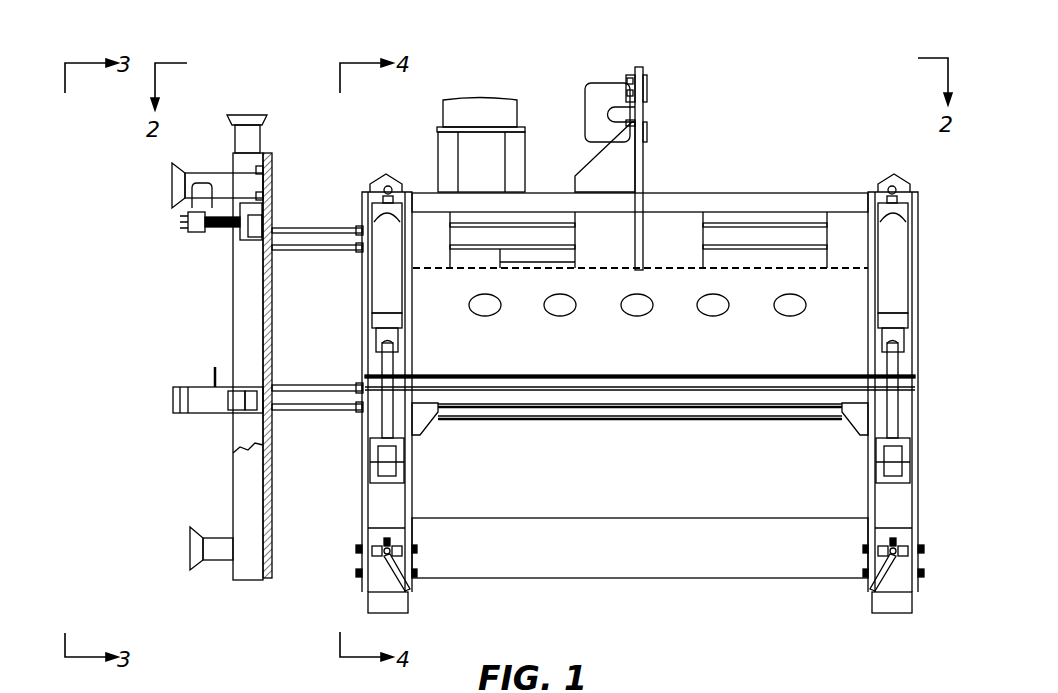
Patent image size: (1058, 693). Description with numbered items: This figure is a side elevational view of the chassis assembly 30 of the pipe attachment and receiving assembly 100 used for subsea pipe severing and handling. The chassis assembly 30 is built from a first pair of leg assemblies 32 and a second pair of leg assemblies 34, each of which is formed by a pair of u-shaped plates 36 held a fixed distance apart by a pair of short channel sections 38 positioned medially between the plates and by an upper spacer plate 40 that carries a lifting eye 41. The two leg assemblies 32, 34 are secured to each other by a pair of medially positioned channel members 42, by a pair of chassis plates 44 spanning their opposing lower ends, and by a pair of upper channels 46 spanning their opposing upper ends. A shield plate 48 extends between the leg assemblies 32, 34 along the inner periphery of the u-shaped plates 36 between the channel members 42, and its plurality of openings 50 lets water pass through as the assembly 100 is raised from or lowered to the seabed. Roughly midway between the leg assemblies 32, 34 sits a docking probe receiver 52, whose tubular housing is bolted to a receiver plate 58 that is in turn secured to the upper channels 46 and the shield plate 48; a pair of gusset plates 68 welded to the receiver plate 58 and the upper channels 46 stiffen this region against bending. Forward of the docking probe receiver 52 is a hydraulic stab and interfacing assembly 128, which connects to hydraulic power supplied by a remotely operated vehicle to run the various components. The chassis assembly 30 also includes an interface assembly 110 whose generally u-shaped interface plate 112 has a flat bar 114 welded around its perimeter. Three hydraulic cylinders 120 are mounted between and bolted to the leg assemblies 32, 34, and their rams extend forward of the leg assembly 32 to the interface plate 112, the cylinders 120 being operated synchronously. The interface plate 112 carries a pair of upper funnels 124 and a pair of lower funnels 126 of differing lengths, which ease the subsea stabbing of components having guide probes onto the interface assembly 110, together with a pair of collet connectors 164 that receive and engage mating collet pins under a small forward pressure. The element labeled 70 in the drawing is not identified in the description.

The pipe attachment and receiving assembly 100 is at (661, 48).
The chassis assembly 30 is at (740, 163).
The first pair of leg assemblies 32 is at (352, 529).
The second pair of leg assemblies 34 is at (940, 548).
The u-shaped plates 36 is at (918, 282).
The short channel sections 38 is at (398, 378).
The upper spacer plate 40 is at (372, 180).
The lifting eye 41 is at (388, 185).
The channel members 42 is at (638, 420).
The chassis plates 44 is at (735, 557).
The upper channels 46 is at (826, 190).
The shield plate 48 is at (688, 363).
The openings 50 is at (774, 303).
The docking probe receiver 52 is at (598, 82).
The receiver plate 58 is at (645, 175).
The gusset plates 68 is at (587, 168).
The hydraulic cylinder 70 is at (382, 280).
The interface assembly 110 is at (226, 312).
The interface plate 112 is at (272, 548).
The flat bar 114 is at (240, 503).
The hydraulic cylinders 120 is at (500, 250).
The upper funnels 124 is at (172, 176).
The lower funnels 126 is at (190, 540).
The hydraulic stab and interfacing assembly 128 is at (478, 99).
The collet connectors 164 is at (200, 387).